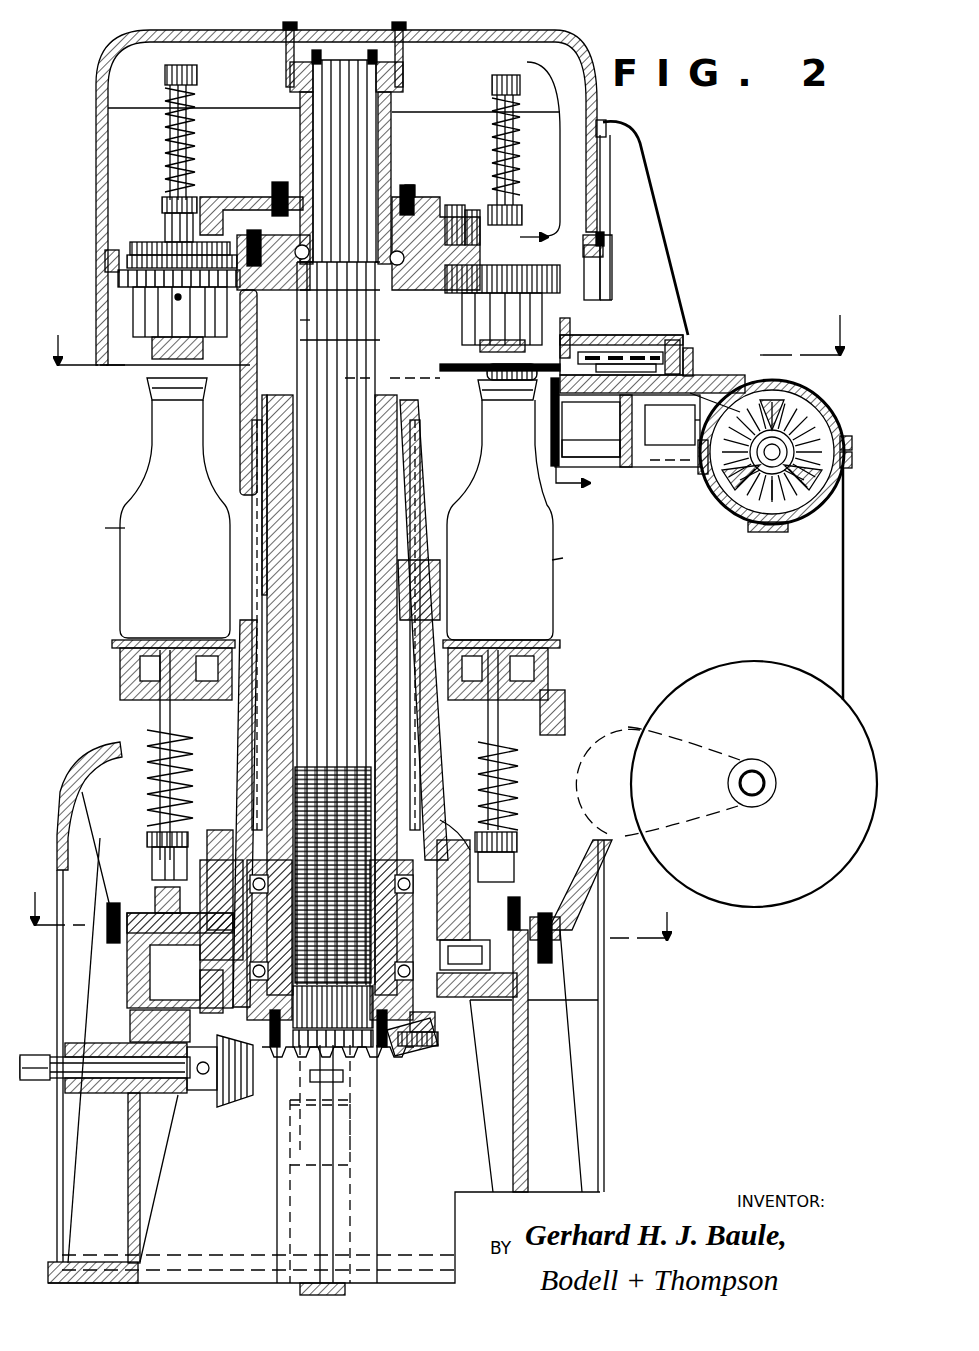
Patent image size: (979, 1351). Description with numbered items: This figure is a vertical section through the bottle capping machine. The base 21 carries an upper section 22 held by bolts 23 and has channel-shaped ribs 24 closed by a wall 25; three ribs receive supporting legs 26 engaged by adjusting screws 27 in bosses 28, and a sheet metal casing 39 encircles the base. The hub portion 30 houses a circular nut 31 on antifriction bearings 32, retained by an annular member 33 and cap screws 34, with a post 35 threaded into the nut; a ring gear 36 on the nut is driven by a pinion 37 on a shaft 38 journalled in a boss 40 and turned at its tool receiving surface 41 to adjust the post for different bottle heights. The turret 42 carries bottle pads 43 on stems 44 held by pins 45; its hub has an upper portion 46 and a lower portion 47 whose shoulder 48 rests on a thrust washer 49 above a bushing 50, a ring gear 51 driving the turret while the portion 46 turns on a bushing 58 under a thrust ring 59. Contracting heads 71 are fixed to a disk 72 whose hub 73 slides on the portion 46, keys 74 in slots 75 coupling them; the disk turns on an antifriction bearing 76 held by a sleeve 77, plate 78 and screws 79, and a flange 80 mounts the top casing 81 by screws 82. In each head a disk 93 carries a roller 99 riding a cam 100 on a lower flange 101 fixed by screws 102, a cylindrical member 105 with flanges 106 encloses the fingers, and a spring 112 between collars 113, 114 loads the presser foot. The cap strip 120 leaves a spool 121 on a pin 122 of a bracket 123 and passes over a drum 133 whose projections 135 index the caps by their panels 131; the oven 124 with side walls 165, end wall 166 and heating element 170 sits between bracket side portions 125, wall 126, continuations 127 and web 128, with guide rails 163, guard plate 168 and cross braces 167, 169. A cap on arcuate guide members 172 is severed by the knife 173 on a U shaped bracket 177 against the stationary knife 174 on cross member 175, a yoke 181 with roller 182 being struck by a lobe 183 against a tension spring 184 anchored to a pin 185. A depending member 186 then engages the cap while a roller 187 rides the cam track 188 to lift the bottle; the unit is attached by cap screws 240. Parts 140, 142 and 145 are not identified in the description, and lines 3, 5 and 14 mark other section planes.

The base 21 is at (512, 1133).
The upper section 22 is at (606, 882).
The bolts 23 is at (107, 940).
The ribs 24 is at (142, 1208).
The wall 25 is at (93, 1280).
The supporting legs 26 is at (348, 1292).
The adjusting screws 27 is at (345, 1078).
The bosses 28 is at (340, 1114).
The hub portion 30 is at (430, 800).
The circular nut 31 is at (430, 915).
The antifriction bearings 32 is at (215, 1000).
The annular member 33 is at (438, 1020).
The cap screws 34 is at (440, 1040).
The post 35 is at (302, 324).
The ring gear 36 is at (422, 1056).
The pinion 37 is at (240, 1098).
The shaft 38 is at (105, 1058).
The sheet metal casing 39 is at (62, 985).
The boss 40 is at (106, 1093).
The tool receiving surface 41 is at (36, 1055).
The turret 42 is at (552, 710).
The bottle receiving pads 43 is at (114, 645).
The stem 44 is at (120, 692).
The pin 45 is at (216, 662).
The upwardly extending hub portion 46 is at (412, 616).
The downwardly extending hub portion 47 is at (432, 824).
The shoulder 48 is at (438, 846).
The thrust washer 49 is at (235, 868).
The bushing 50 is at (212, 900).
The ring gear 51 is at (148, 962).
The bushing 58 is at (412, 436).
The thrust ring 59 is at (279, 478).
The cap folding and contracting heads 71 is at (118, 278).
The disk 72 is at (135, 248).
The depending hub portion 73 is at (246, 392).
The keys 74 is at (256, 540).
The slots 75 is at (392, 336).
The antifriction bearing 76 is at (355, 301).
The sleeve 77 is at (391, 168).
The plate 78 is at (322, 58).
The screws 79 is at (375, 52).
The flange 80 is at (403, 84).
The top casing 81 is at (592, 46).
The screws 82 is at (288, 28).
The disk 93 is at (165, 240).
The roller 99 is at (473, 212).
The cam 100 is at (455, 206).
The lower flange 101 is at (272, 208).
The screws 102 is at (412, 192).
The cylindrical member 105 is at (135, 312).
The flanges 106 is at (152, 348).
The spring 112 is at (196, 140).
The collar 113 is at (198, 73).
The collar 114 is at (522, 214).
The cap strip 120 is at (842, 590).
The spool 121 is at (738, 660).
The pin 122 is at (766, 781).
The bracket 123 is at (622, 728).
The cap heating oven 124 is at (625, 334).
The side portions 125 is at (664, 274).
The transversely extending wall 126 is at (646, 236).
The continuation 127 is at (688, 422).
The intermediate web 128 is at (632, 440).
The panels 131 is at (150, 394).
The drum 133 is at (735, 508).
The radial projections 135 is at (702, 474).
The spider 140 is at (772, 445).
The gear 142 is at (806, 448).
The arm 145 is at (772, 491).
The guide rails 163 is at (715, 398).
The side walls 165 is at (670, 338).
The end wall 166 is at (690, 352).
The cross brace 167 is at (700, 376).
The guard plate 168 is at (845, 436).
The cross brace 169 is at (852, 456).
The heating element 170 is at (626, 357).
The arcuate guide members 172 is at (455, 372).
The knife 173 is at (512, 381).
The stationary upper knife 174 is at (615, 353).
The cross member 175 is at (570, 326).
The U shaped bracket 177 is at (552, 400).
The yoke 181 is at (598, 262).
The roller 182 is at (614, 231).
The lobe 183 is at (105, 255).
The tension spring 184 is at (570, 432).
The pin 185 is at (585, 458).
The depending member 186 is at (500, 398).
The roller 187 is at (150, 864).
The cam track 188 is at (520, 896).
The cap screws 240 is at (606, 135).
The section line 3- 3 is at (447, 325).
The section line 5- 5 is at (347, 903).
The section line 14- 14 is at (567, 355).